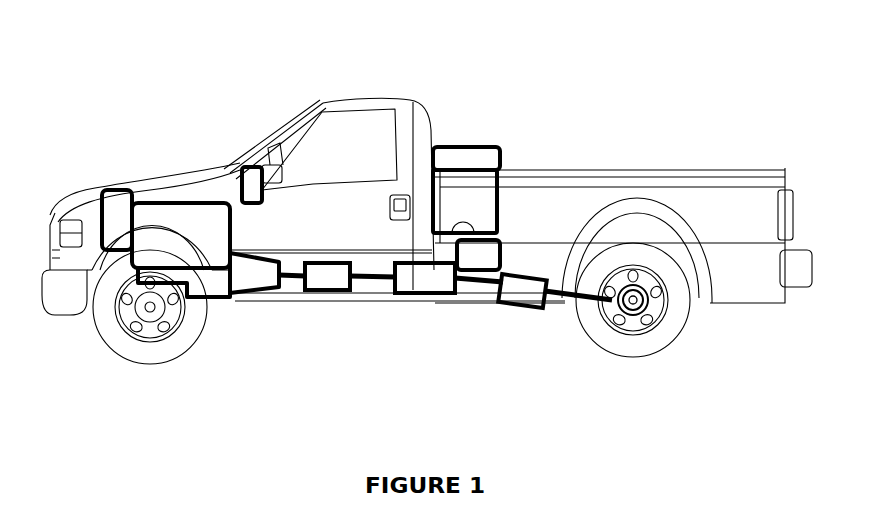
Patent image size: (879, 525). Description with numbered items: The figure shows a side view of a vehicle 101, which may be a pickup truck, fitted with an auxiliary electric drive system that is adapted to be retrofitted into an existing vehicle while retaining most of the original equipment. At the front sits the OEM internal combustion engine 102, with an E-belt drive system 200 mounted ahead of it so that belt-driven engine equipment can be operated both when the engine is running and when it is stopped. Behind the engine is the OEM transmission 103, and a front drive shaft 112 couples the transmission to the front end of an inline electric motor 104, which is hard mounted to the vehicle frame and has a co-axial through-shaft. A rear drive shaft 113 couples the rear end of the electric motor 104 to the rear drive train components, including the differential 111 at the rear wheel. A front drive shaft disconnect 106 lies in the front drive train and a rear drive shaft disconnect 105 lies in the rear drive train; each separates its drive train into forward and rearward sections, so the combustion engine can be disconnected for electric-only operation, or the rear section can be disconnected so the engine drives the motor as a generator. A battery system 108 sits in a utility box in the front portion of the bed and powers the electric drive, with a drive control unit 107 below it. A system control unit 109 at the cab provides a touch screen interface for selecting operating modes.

The vehicle 101 is at (362, 100).
The E-belt drive system 200 is at (117, 190).
The OEM internal combustion engine 102 is at (210, 203).
The system control unit 109 is at (242, 165).
The battery system 108 is at (503, 152).
The drive control unit 107 is at (500, 243).
The OEM transmission 103 is at (265, 290).
The front drive shaft disconnect 106 is at (318, 292).
The inline electric motor 104 is at (417, 295).
The rear drive shaft disconnect 105 is at (520, 307).
The front drive shaft 112 is at (370, 280).
The rear drive shaft 113 is at (483, 283).
The differential 111 is at (633, 317).